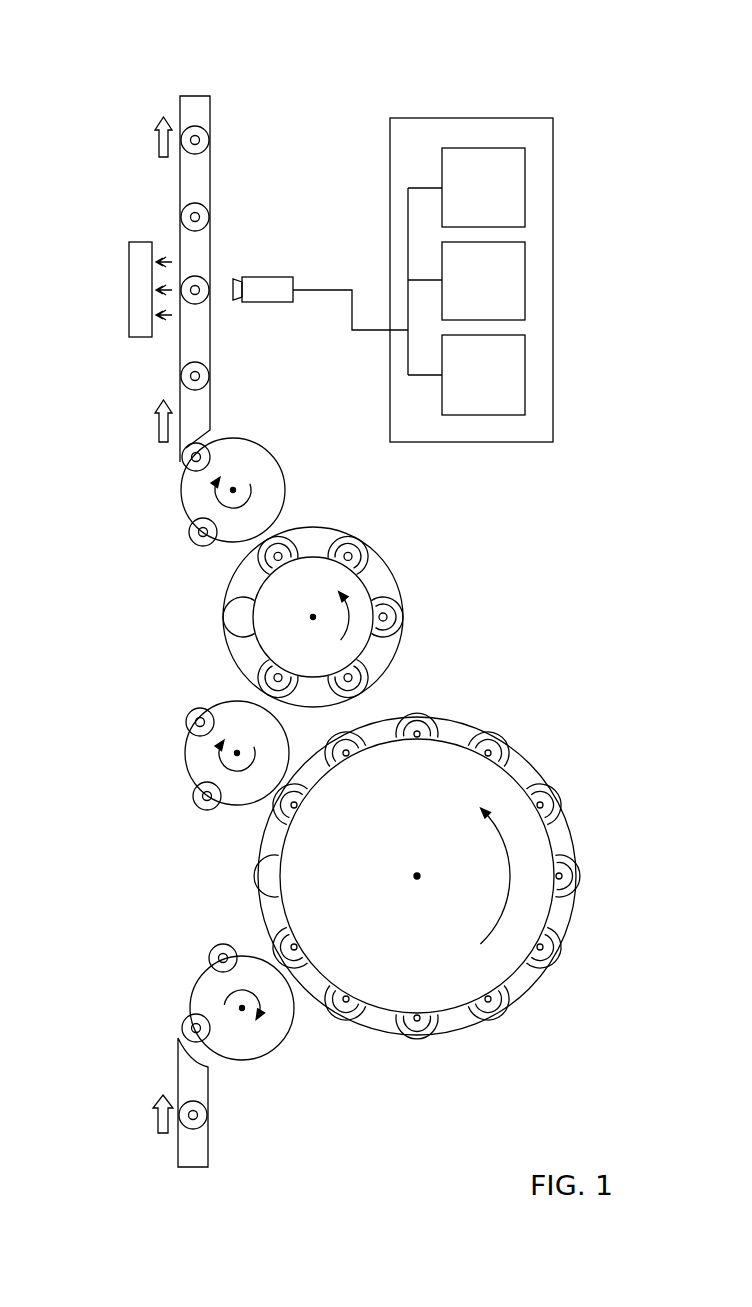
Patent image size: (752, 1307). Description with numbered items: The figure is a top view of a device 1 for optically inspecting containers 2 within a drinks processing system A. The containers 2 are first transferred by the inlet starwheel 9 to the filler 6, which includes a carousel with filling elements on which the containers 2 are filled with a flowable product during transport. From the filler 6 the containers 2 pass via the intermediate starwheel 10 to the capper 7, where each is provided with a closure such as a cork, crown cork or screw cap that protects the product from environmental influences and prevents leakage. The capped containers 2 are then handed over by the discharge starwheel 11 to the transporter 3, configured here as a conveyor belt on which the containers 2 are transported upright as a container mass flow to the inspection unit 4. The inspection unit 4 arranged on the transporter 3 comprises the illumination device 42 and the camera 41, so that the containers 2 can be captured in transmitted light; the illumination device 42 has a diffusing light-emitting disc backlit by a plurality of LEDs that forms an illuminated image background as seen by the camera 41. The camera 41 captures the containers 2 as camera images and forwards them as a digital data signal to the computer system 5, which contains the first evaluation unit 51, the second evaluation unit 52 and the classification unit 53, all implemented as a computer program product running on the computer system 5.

The device 1 is at (292, 73).
The containers 2 is at (207, 284).
The transporter 3 is at (211, 348).
The inspection unit 4 is at (284, 215).
The camera 41 is at (258, 300).
The illumination device 42 is at (130, 288).
The computer system 5 is at (523, 128).
The first evaluation unit 51 is at (512, 361).
The second evaluation unit 52 is at (512, 268).
The classification unit 53 is at (512, 174).
The filler 6 is at (567, 740).
The capper 7 is at (411, 549).
The inlet starwheel 9 is at (200, 985).
The intermediate starwheel 10 is at (185, 755).
The discharge starwheel 11 is at (185, 497).
The drinks processing system A is at (655, 556).